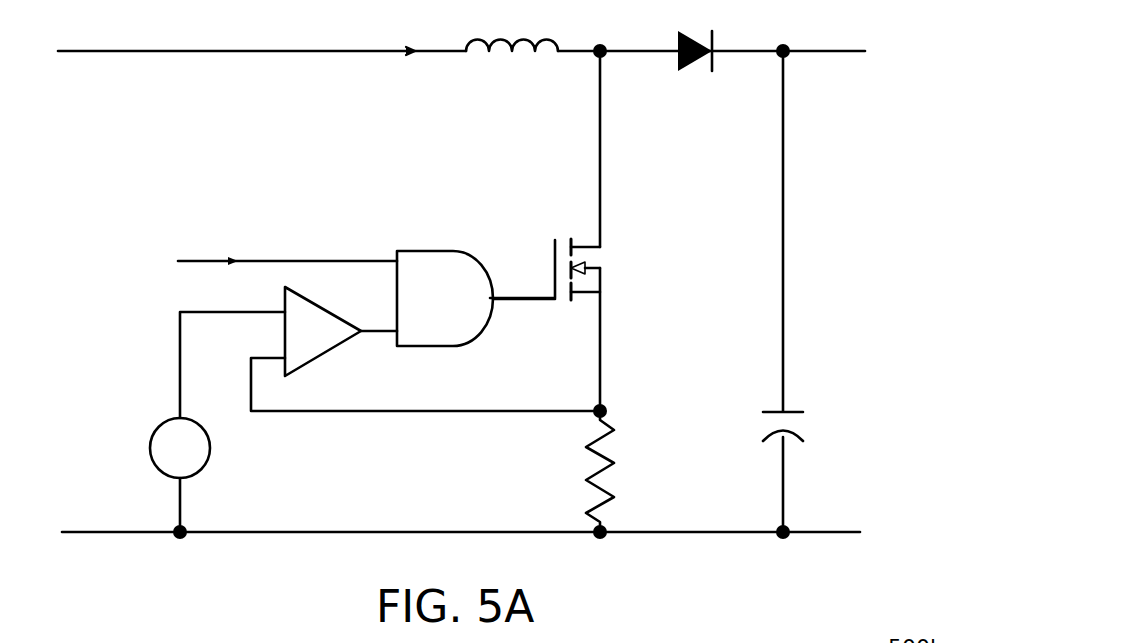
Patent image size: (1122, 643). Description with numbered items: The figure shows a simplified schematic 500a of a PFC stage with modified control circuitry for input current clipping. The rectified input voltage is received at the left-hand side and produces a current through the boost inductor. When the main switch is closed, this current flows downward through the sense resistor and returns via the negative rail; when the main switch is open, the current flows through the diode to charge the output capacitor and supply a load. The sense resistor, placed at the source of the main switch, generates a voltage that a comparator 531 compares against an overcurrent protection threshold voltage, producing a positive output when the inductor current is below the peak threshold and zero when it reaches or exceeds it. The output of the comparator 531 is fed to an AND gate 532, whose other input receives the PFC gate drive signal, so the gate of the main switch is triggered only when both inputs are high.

The simplified schematic 500a is at (499, 293).
The comparator 531 is at (322, 357).
The AND gate 532 is at (421, 251).